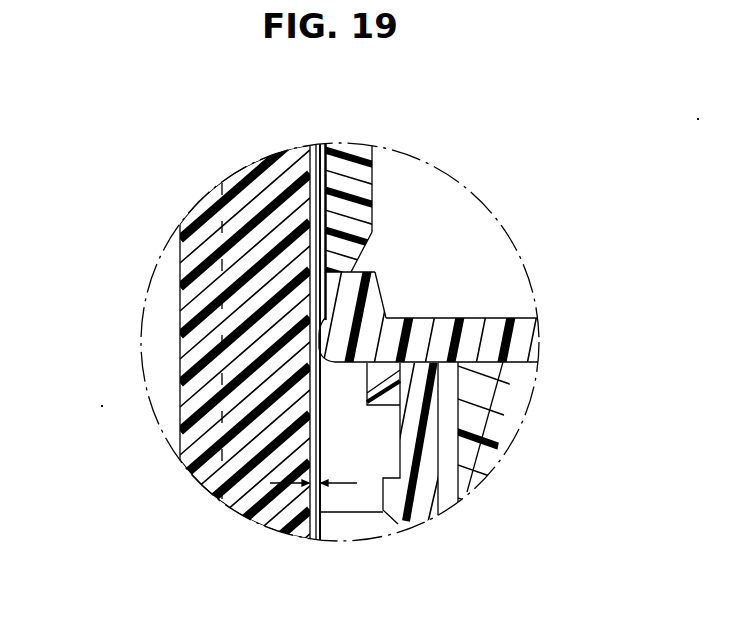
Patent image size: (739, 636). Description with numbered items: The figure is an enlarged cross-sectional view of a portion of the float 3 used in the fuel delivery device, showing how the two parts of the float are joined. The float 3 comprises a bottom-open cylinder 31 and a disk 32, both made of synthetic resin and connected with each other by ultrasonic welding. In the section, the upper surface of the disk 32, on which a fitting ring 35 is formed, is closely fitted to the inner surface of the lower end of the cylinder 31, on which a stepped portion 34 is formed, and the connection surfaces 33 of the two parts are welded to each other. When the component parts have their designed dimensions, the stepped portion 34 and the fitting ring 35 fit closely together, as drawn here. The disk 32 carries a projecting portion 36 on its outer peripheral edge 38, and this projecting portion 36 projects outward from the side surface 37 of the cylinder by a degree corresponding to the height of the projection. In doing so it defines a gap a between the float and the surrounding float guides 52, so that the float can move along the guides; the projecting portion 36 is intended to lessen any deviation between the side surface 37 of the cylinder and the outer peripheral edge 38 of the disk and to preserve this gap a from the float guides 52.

The float 3 is at (425, 173).
The bottom-open cylinder 31 is at (316, 150).
The disk 32 is at (473, 385).
The connection surfaces 33 is at (352, 258).
The stepped portion 34 is at (372, 240).
The fitting ring 35 is at (375, 288).
The projecting portion 36 is at (317, 328).
The side surface of the cylinder 37 is at (295, 205).
The outer peripheral edge of the disk 38 is at (221, 425).
The float guides 52 is at (274, 506).
The gap a is at (309, 490).